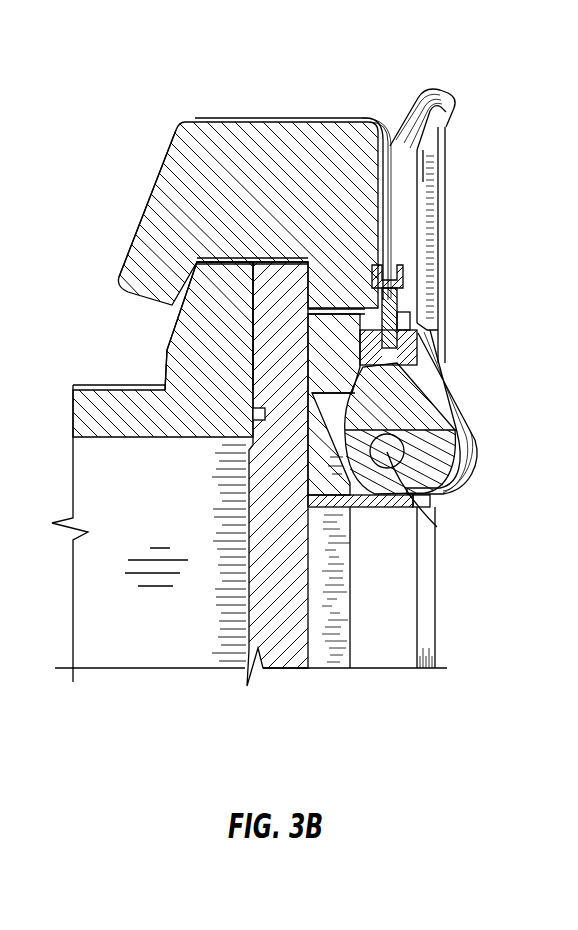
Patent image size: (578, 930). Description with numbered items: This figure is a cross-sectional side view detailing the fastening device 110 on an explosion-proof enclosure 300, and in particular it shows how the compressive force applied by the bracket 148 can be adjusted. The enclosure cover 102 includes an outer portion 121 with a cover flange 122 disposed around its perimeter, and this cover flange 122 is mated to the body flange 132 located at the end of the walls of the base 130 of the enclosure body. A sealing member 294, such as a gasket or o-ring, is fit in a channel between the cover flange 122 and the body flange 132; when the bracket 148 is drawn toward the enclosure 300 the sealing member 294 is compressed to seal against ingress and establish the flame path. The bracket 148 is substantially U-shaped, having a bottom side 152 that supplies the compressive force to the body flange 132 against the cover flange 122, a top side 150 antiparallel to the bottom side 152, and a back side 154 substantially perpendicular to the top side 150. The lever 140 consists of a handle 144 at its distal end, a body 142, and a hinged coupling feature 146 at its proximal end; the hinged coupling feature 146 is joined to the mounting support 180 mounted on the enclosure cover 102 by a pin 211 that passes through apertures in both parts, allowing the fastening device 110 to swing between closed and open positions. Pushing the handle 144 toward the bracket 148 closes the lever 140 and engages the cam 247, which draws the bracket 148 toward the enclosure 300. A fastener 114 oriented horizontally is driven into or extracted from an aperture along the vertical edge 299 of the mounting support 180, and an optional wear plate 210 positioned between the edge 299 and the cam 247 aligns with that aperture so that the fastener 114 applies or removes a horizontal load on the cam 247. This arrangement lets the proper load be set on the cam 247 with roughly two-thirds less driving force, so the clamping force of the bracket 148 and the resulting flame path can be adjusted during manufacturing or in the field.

The explosion-proof enclosure 300 is at (102, 96).
The bracket 148 is at (249, 173).
The back side 154 is at (237, 106).
The fastener 114 is at (387, 270).
The fastening device 110 is at (454, 195).
The handle 144 is at (442, 121).
The body 142 is at (422, 178).
The bottom side 152 is at (141, 204).
The edge 299 is at (425, 328).
The wear plate 210 is at (414, 353).
The lever 140 is at (475, 412).
The hinged coupling feature 146 is at (472, 445).
The cam 247 is at (430, 457).
The pin 211 is at (437, 527).
The mounting support 180 is at (333, 507).
The top side 150 is at (408, 625).
The base 130 is at (163, 424).
The body flange 132 is at (228, 360).
The cover flange 122 is at (245, 496).
The sealing member 294 is at (252, 415).
The enclosure cover 102 is at (263, 682).
The outer portion 121 is at (289, 678).